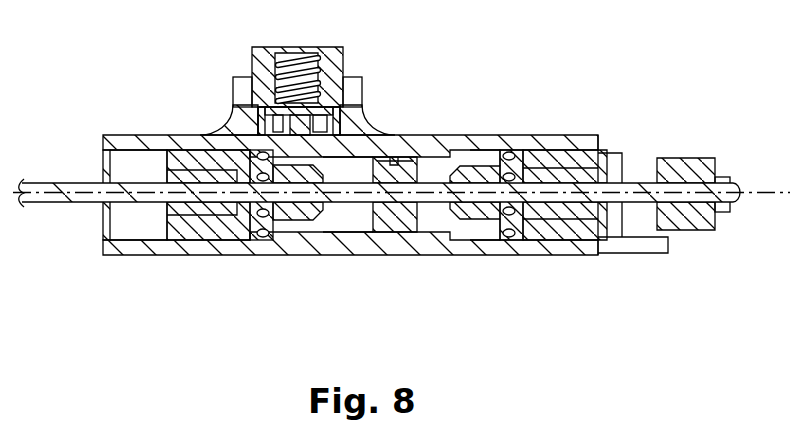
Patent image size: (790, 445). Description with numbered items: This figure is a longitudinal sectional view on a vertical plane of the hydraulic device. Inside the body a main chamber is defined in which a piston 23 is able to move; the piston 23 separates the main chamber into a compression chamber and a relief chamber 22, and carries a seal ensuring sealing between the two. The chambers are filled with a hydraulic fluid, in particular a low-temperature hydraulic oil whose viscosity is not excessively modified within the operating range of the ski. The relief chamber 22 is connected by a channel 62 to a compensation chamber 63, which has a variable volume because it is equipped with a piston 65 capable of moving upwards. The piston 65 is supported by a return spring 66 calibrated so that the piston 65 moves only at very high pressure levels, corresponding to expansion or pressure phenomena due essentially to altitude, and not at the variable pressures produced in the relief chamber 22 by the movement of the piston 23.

The relief chamber 22 is at (343, 170).
The piston 23 is at (415, 214).
The channel 62 is at (258, 143).
The compensation chamber 63 is at (297, 118).
The piston 65 is at (273, 116).
The return spring 66 is at (293, 83).